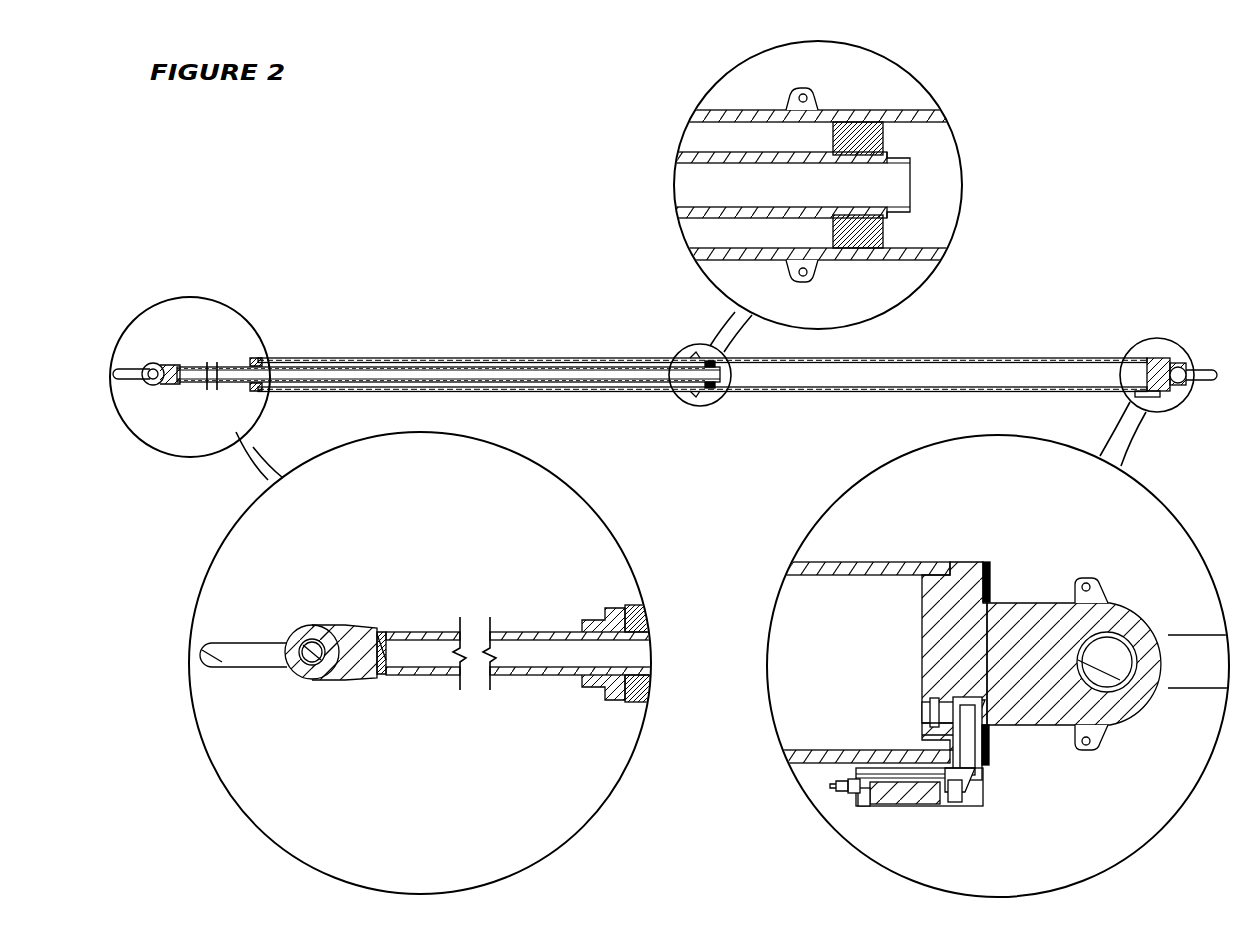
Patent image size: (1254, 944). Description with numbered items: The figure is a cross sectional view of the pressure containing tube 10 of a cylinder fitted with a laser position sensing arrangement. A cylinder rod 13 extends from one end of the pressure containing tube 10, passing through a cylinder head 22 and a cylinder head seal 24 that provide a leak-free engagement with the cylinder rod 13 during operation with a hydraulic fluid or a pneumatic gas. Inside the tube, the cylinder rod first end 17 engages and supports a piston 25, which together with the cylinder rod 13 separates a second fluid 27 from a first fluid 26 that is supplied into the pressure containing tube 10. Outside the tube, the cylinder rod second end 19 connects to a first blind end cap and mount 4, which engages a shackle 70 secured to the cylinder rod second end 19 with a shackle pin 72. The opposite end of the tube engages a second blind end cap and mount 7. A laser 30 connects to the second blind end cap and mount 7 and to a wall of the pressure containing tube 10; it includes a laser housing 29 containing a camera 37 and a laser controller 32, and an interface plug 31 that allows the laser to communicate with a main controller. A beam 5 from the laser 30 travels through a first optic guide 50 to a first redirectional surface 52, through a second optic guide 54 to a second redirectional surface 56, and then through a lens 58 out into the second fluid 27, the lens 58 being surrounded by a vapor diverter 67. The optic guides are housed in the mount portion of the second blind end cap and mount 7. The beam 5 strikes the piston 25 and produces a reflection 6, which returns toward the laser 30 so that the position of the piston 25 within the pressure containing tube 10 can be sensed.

The first blind end cap and mount 4 is at (312, 626).
The beam 5 is at (950, 238).
The reflection 6 is at (887, 230).
The second blind end cap and mount 7 is at (1050, 604).
The pressure containing tube 10 is at (880, 110).
The cylinder rod 13 is at (540, 632).
The cylinder rod first end 17 is at (808, 148).
The cylinder rod second end 19 is at (384, 672).
The cylinder head 22 is at (612, 702).
The cylinder head seal 24 is at (622, 612).
The piston 25 is at (858, 250).
The first fluid 26 is at (812, 266).
The second fluid 27 is at (912, 578).
The laser housing 29 is at (906, 806).
The laser 30 is at (930, 818).
The interface plug 31 is at (836, 786).
The laser controller 32 is at (856, 796).
The camera 37 is at (865, 808).
The first optic guide 50 is at (957, 803).
The first redirectional surface 52 is at (970, 785).
The second optic guide 54 is at (972, 762).
The second redirectional surface 56 is at (930, 727).
The lens 58 is at (925, 710).
The vapor diverter 67 is at (945, 700).
The shackle 70 is at (210, 648).
The shackle pin 72 is at (316, 662).